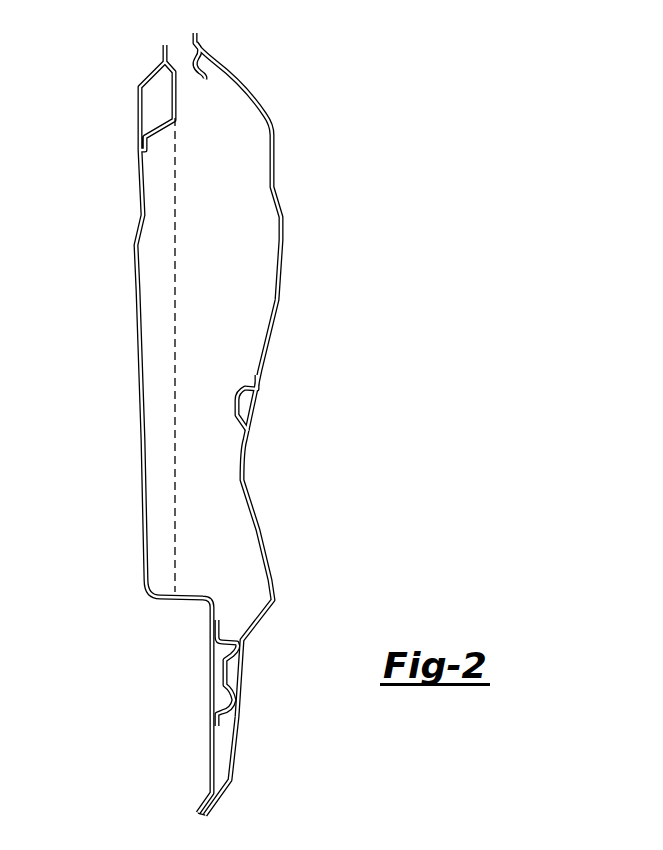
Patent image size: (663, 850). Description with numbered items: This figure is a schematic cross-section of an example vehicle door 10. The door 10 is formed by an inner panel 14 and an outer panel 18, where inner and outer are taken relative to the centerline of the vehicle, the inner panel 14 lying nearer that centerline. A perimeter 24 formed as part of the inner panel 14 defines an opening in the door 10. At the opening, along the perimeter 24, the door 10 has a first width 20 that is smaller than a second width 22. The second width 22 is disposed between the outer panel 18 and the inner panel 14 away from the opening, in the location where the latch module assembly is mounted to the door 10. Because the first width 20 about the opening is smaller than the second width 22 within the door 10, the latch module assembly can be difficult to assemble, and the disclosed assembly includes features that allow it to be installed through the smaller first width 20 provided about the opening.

The vehicle door 10 is at (207, 424).
The inner panel 14 is at (137, 292).
The outer panel 18 is at (273, 330).
The first width 20 is at (281, 243).
The second width 22 is at (272, 177).
The perimeter 24 is at (175, 432).